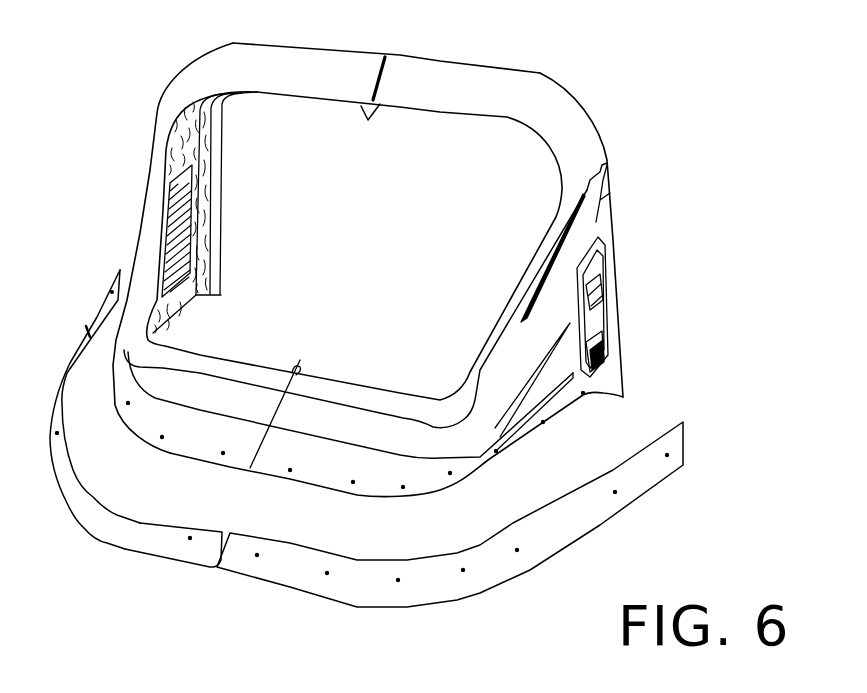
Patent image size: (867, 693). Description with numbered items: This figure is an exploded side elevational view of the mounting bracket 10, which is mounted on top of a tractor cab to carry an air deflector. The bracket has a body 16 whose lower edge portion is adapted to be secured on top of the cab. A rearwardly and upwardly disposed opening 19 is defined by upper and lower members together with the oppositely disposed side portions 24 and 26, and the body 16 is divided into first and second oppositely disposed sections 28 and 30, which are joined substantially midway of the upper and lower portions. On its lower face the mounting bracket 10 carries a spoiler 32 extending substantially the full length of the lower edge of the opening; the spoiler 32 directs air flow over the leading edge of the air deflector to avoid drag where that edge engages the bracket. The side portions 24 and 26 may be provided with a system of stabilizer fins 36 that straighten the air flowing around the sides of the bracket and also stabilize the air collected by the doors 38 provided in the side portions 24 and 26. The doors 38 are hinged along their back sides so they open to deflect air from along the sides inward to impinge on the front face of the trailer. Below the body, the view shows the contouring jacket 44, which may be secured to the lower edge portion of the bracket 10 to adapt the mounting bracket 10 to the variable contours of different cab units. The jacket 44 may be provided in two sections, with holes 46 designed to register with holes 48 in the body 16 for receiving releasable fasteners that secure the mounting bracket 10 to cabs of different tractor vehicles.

The mounting bracket 10 is at (362, 318).
The body 16 is at (553, 118).
The opening 19 is at (530, 223).
The side portion 24 is at (560, 284).
The side portion 26 is at (207, 140).
The first section 28 is at (454, 82).
The second section 30 is at (348, 67).
The spoiler 32 is at (233, 400).
The stabilizer fins 36 is at (563, 337).
The doors 38 is at (593, 313).
The contouring jacket 44 is at (170, 560).
The holes 46 is at (125, 520).
The holes 48 is at (223, 453).